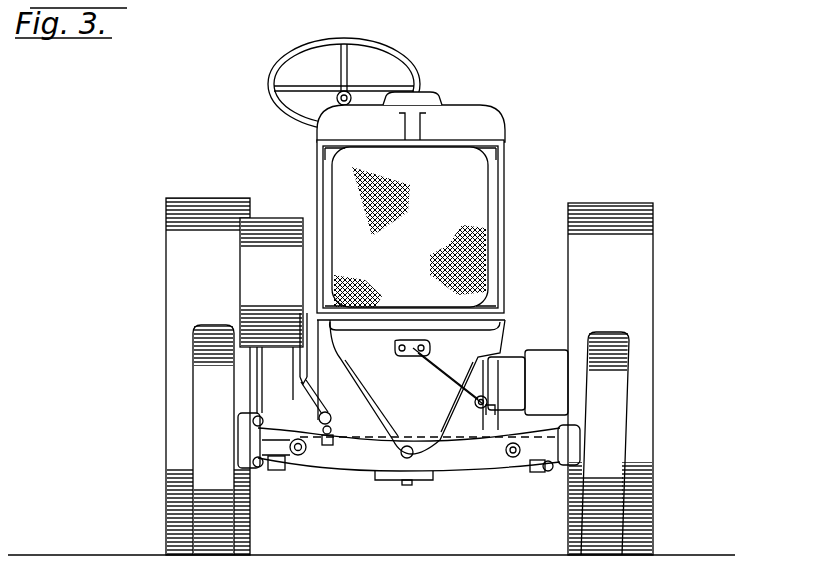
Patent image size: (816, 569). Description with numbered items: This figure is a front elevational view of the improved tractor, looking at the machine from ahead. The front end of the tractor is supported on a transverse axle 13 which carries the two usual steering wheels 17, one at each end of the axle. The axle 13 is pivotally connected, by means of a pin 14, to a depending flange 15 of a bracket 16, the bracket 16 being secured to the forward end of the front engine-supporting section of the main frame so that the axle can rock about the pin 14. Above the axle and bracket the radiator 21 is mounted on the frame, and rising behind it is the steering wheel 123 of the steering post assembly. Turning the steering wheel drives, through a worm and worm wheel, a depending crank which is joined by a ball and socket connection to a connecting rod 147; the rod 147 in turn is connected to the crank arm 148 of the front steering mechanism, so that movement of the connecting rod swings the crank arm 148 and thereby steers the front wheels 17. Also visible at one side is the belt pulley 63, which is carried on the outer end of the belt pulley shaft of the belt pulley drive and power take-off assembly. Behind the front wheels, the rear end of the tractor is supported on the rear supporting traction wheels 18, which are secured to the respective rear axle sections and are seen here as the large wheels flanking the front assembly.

The steering wheel 123 is at (295, 58).
The belt pulley 63 is at (278, 240).
The radiator 21 is at (475, 185).
The connecting rod 147 is at (312, 394).
The rear supporting traction wheels 18 is at (177, 408).
The steering wheels 17 is at (203, 475).
The crank arm 148 is at (291, 432).
The depending flange 15 is at (378, 447).
The pin 14 is at (404, 459).
The bracket 16 is at (447, 440).
The transverse axle 13 is at (470, 473).